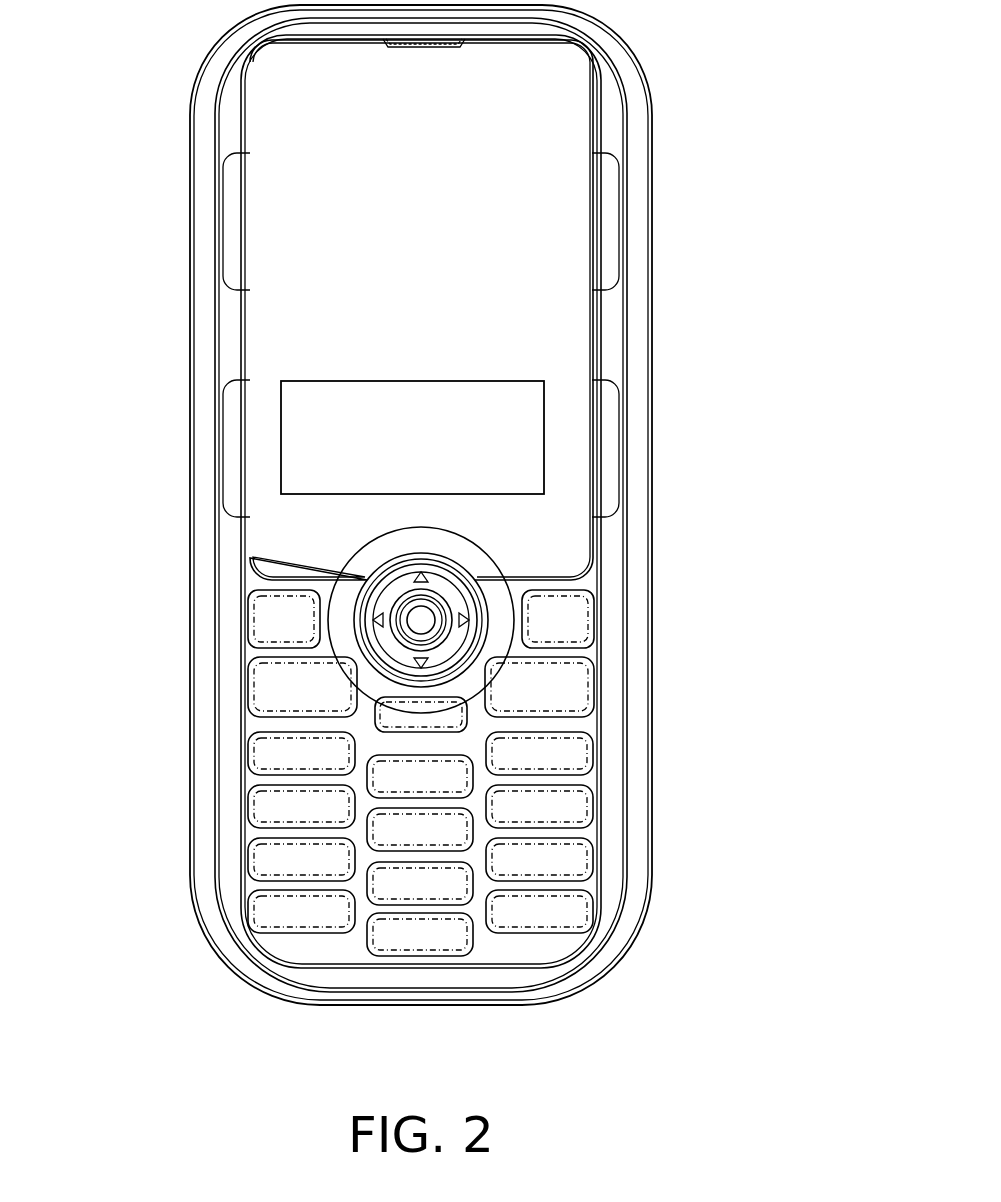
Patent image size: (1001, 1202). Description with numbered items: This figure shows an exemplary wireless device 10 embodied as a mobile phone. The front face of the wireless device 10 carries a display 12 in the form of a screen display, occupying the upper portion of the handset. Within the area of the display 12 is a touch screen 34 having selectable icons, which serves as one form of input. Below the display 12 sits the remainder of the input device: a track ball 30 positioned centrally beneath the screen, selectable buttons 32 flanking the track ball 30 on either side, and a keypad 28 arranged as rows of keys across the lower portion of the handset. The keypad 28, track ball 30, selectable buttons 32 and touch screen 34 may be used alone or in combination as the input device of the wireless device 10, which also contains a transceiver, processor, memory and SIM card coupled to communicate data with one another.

The wireless device 10 is at (155, 117).
The display 12 is at (557, 268).
The touch screen 34 is at (507, 437).
The track ball 30 is at (458, 587).
The selectable buttons 32 is at (582, 623).
The keypad 28 is at (557, 753).